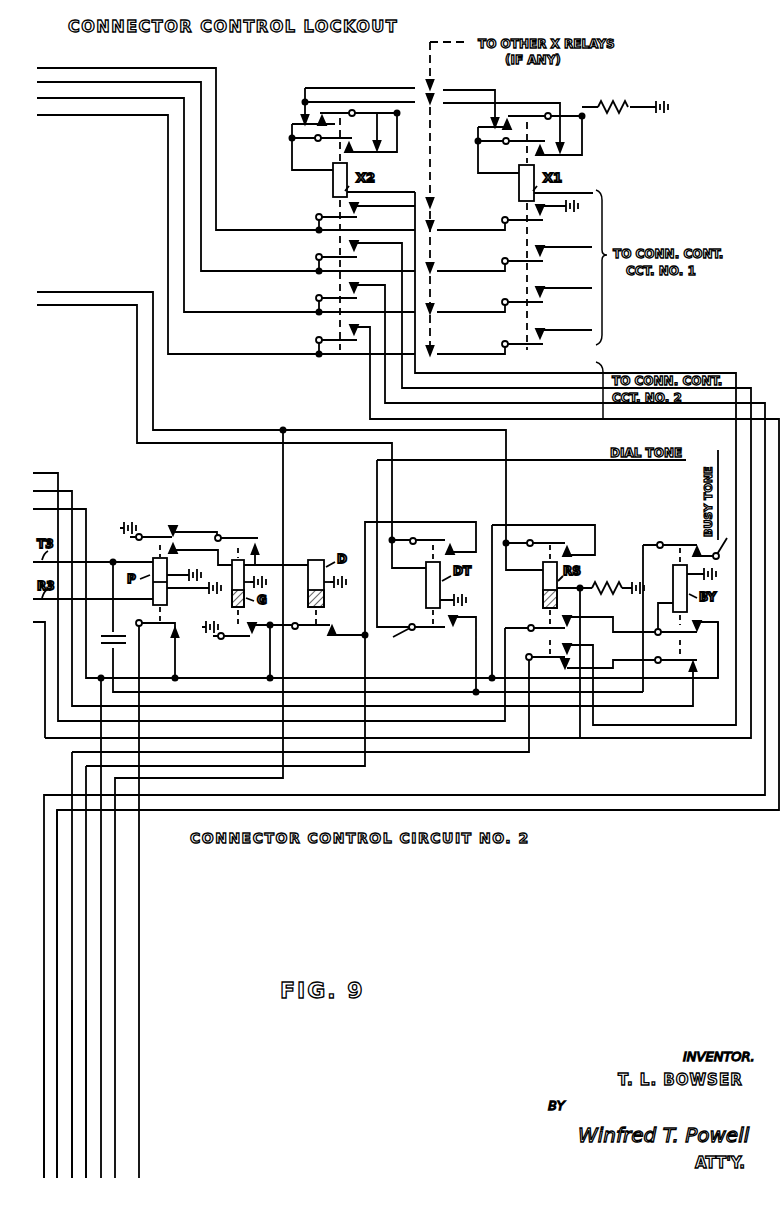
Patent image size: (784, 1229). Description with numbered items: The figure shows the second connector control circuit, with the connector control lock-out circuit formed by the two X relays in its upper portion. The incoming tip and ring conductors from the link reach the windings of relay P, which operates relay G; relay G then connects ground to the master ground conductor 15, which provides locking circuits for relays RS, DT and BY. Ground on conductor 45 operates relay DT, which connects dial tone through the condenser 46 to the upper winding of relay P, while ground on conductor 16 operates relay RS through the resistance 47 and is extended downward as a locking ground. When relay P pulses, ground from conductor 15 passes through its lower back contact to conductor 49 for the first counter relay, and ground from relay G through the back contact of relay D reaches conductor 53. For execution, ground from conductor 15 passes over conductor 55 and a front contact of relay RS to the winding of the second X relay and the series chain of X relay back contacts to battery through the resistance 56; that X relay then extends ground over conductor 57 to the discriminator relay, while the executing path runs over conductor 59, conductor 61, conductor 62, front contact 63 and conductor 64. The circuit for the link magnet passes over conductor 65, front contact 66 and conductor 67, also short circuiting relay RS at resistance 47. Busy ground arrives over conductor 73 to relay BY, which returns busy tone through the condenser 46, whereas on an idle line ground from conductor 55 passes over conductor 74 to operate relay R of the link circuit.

The conductor 57 is at (60, 66).
The conductor 65 is at (103, 83).
The conductor 62 is at (60, 98).
The conductor 61 is at (55, 116).
The resistance 56 is at (605, 95).
The front contact of relay X2 66 is at (309, 252).
The front contact of relay X2 63 is at (309, 294).
The conductor 16 is at (45, 292).
The conductor 45 is at (45, 306).
The conductor 73 is at (42, 473).
The conductor 74 is at (65, 491).
The master ground conductor 15 is at (38, 510).
The conductor 67 is at (54, 612).
The condenser 46 is at (124, 633).
The resistance 47 is at (600, 582).
The conductor 59 is at (57, 1027).
The conductor 53 is at (85, 1052).
The conductor 64 is at (44, 1086).
The conductor 55 is at (72, 1131).
The conductor 49 is at (139, 1148).